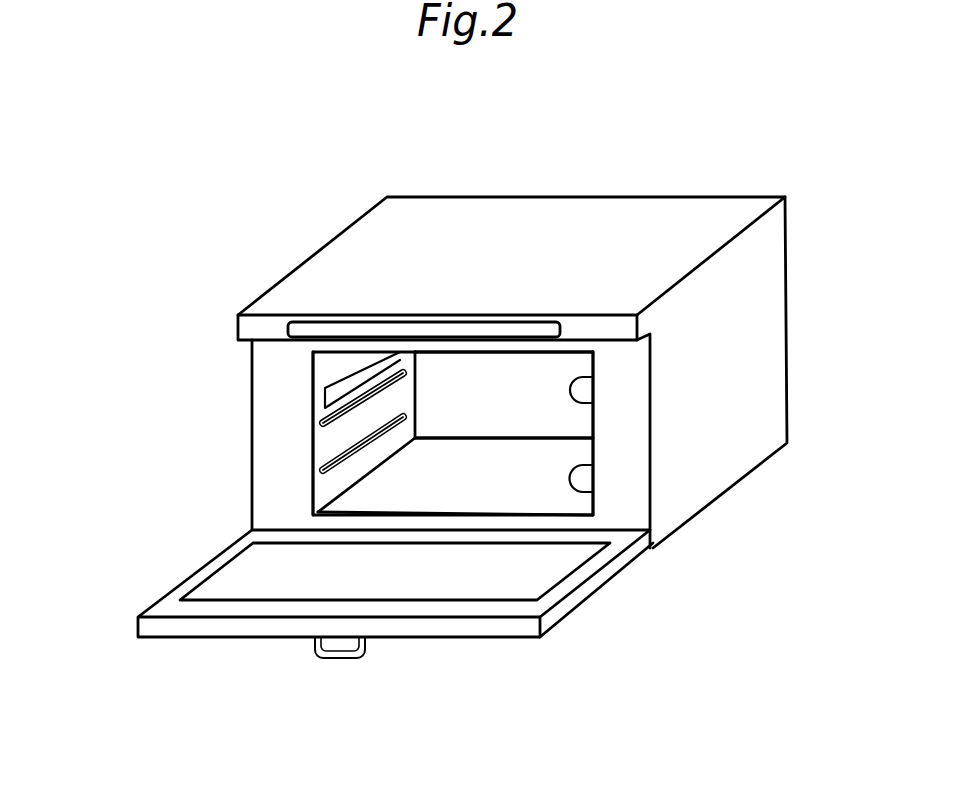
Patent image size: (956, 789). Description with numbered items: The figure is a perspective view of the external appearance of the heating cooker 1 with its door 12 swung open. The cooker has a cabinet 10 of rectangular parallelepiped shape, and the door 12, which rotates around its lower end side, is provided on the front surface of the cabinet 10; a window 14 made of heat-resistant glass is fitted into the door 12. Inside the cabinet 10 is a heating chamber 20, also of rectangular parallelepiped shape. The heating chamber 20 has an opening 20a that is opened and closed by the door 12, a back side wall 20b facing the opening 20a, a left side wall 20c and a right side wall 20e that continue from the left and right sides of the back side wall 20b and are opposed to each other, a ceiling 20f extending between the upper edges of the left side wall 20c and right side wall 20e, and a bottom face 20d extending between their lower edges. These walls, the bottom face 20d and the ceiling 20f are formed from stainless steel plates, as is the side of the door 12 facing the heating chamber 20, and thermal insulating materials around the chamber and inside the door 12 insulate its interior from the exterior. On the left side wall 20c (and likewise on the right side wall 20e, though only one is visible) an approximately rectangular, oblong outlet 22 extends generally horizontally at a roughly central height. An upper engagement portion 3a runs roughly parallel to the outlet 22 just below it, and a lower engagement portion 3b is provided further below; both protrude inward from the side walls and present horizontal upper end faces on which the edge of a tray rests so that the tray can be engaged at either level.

The heating cooker 1 is at (755, 178).
The cabinet 10 is at (315, 290).
The door 12 is at (597, 582).
The window 14 is at (273, 578).
The heating chamber 20 is at (338, 374).
The opening 20a is at (595, 377).
The back side wall 20b is at (560, 367).
The left side wall 20c is at (337, 490).
The bottom face 20d is at (378, 498).
The right side wall 20e is at (595, 502).
The ceiling 20f is at (505, 375).
The outlet 22 is at (325, 396).
The upper engagement portion 3a is at (323, 421).
The lower engagement portion 3b is at (323, 468).